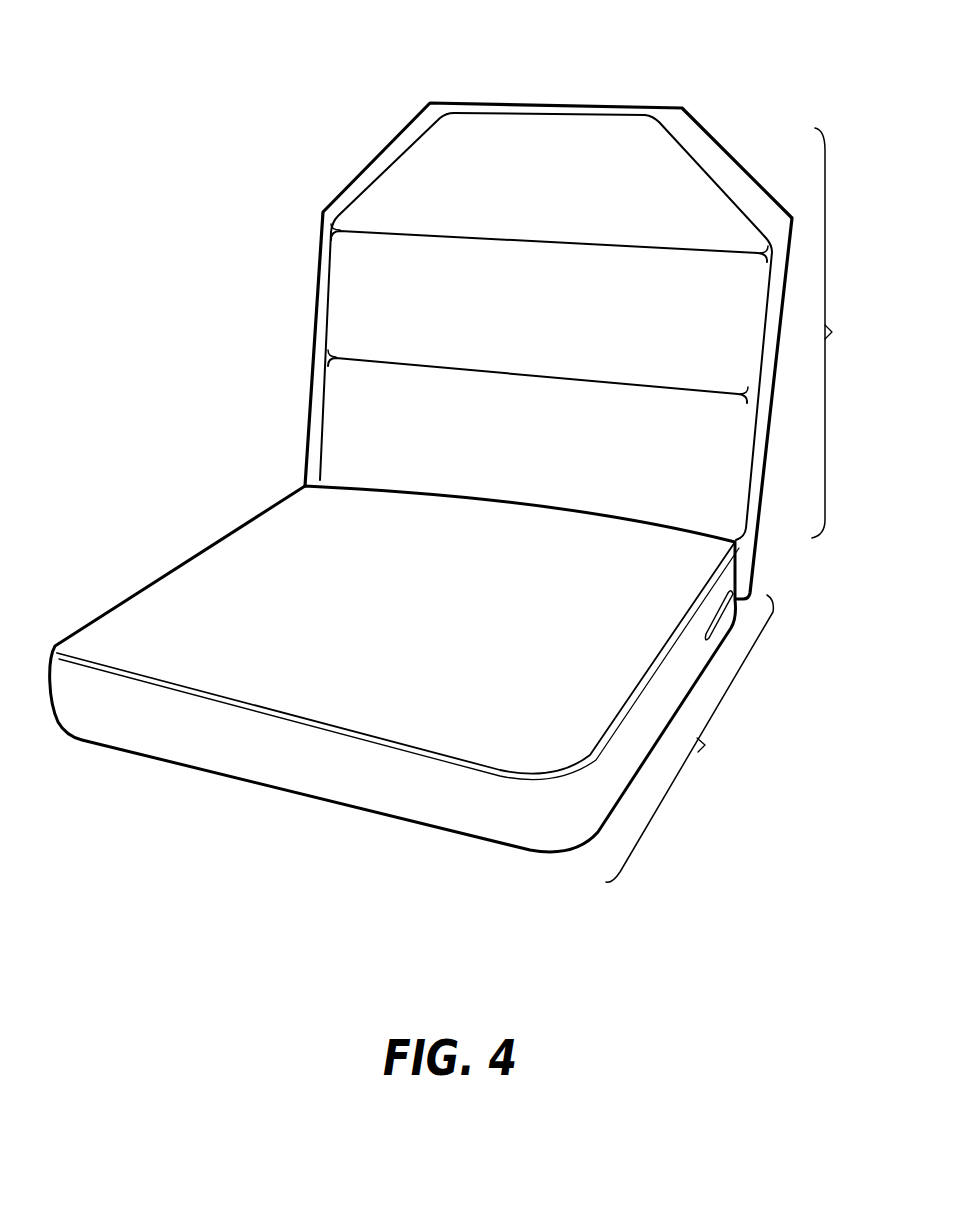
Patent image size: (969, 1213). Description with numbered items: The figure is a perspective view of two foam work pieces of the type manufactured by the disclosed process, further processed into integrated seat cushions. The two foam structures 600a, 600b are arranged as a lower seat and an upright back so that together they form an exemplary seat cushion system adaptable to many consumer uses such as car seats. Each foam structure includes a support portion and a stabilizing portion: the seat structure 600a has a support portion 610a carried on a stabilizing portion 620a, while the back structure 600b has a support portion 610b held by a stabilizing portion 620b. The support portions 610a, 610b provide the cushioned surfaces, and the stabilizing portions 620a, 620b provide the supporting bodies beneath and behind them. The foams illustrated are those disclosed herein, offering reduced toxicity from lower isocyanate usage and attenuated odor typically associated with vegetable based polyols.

The foam structure 600a is at (689, 738).
The foam structure 600b is at (853, 333).
The support portion 610a is at (148, 627).
The support portion 610b is at (436, 163).
The stabilizing portion 620a is at (360, 808).
The stabilizing portion 620b is at (690, 137).